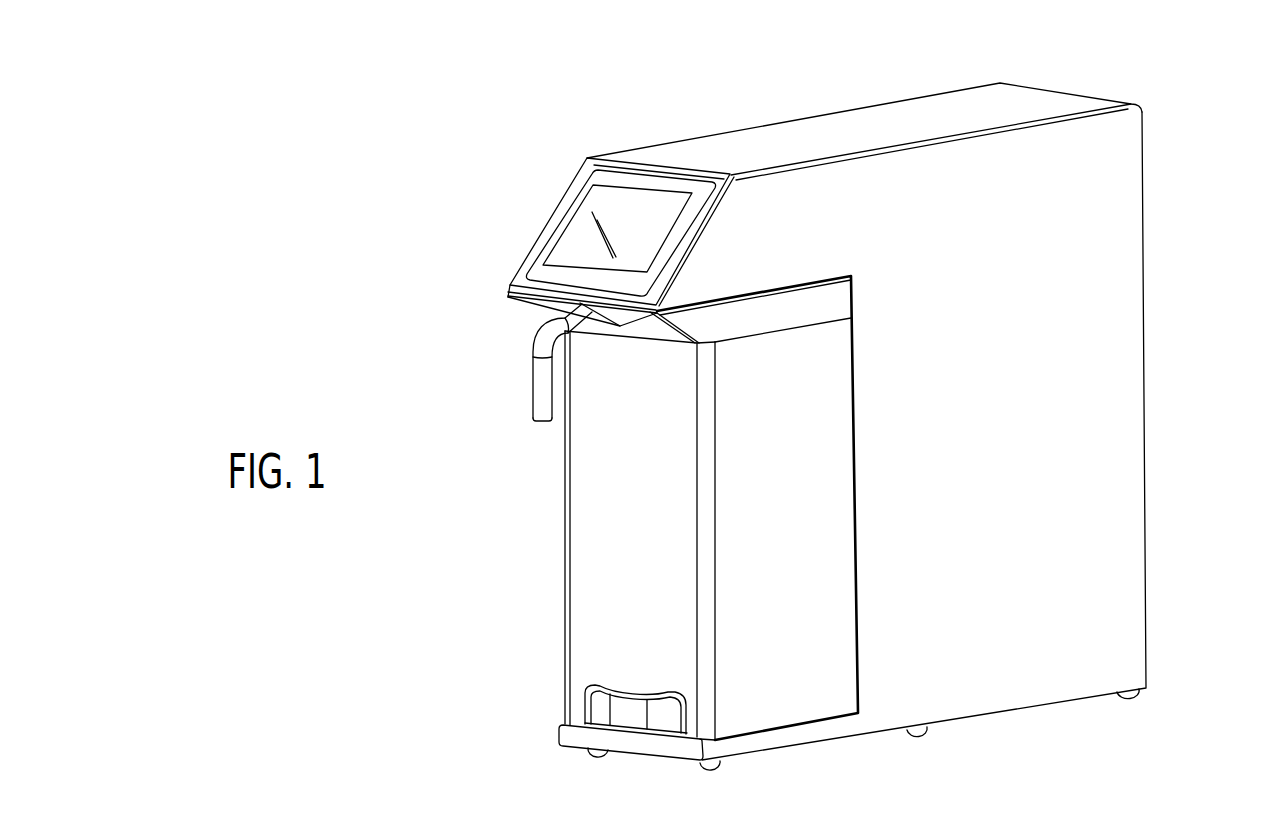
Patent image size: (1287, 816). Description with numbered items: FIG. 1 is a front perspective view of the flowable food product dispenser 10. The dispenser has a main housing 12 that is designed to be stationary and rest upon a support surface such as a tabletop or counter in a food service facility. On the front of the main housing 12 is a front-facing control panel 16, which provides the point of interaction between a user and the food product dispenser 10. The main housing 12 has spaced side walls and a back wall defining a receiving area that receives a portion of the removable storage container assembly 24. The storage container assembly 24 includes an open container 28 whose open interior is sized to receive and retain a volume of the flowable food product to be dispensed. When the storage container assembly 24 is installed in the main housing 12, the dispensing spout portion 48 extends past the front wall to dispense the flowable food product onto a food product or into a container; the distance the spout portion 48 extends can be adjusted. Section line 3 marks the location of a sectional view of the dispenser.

The food product dispenser 10 is at (840, 411).
The main housing 12 is at (1162, 400).
The control panel 16 is at (623, 213).
The storage container assembly 24 is at (603, 535).
The open container 28 is at (590, 598).
The dispensing spout portion 48 is at (542, 399).
The section line 3- 3 is at (410, 187).